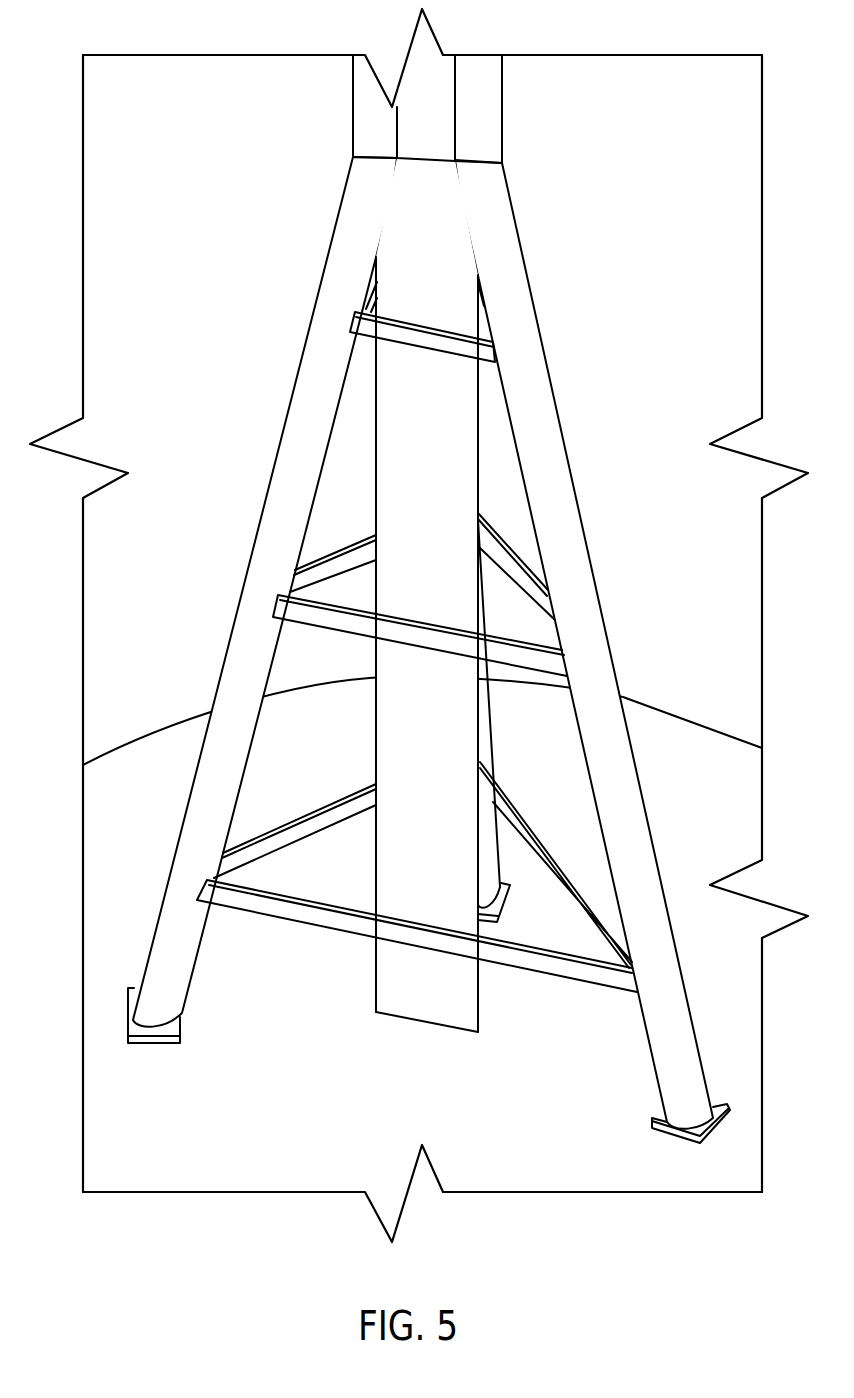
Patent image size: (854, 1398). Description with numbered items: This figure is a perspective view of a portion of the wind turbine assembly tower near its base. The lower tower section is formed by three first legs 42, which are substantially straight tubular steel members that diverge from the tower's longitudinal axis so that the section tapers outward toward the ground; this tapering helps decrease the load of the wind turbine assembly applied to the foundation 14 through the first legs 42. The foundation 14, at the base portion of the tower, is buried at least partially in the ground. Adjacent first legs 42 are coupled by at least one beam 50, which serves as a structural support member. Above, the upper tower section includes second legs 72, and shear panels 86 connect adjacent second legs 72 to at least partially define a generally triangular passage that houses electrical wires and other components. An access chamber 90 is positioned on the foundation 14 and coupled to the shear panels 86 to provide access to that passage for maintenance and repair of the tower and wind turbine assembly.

The foundation 14 is at (163, 752).
The first leg 42 is at (253, 632).
The beam 50 is at (330, 918).
The second leg 72 is at (375, 107).
The shear panel 86 is at (440, 77).
The access chamber 90 is at (428, 830).